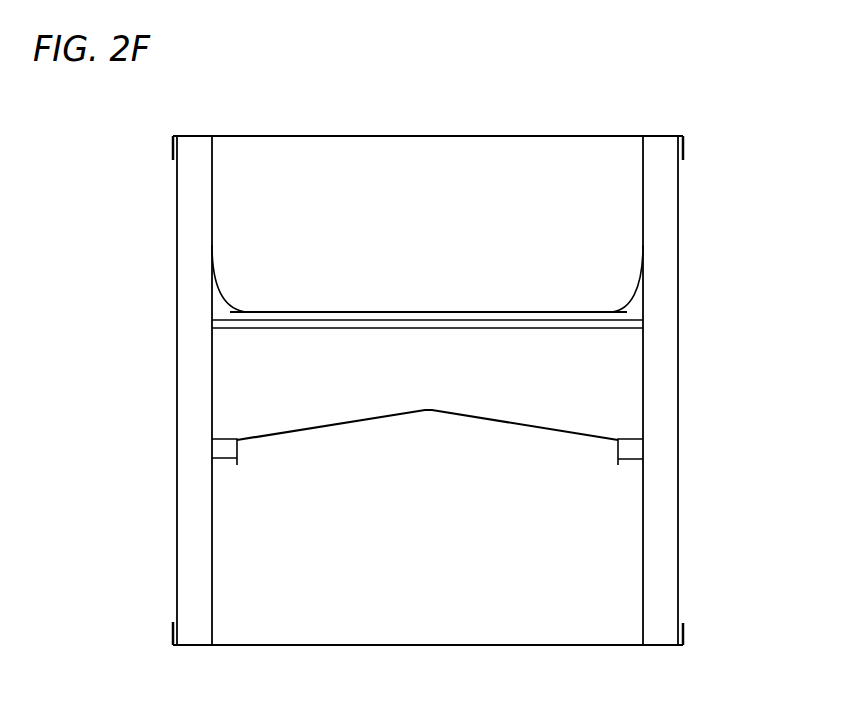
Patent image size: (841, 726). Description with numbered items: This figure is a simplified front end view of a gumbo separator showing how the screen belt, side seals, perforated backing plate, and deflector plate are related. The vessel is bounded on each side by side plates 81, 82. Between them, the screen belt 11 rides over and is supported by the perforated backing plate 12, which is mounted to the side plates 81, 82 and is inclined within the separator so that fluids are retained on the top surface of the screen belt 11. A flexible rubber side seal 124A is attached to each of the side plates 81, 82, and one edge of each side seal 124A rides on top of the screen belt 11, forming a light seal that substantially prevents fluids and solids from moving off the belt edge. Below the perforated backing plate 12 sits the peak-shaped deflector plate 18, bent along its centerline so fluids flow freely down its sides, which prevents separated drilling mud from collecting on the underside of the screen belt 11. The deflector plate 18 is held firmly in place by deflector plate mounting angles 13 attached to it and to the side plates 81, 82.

The screen belt 11 is at (389, 312).
The perforated backing plate 12 is at (470, 329).
The deflector plate mounting angle 13 is at (228, 452).
The deflector plate 18 is at (365, 418).
The side plate 81 is at (193, 505).
The side plate 82 is at (668, 393).
The side seal 124A is at (427, 278).